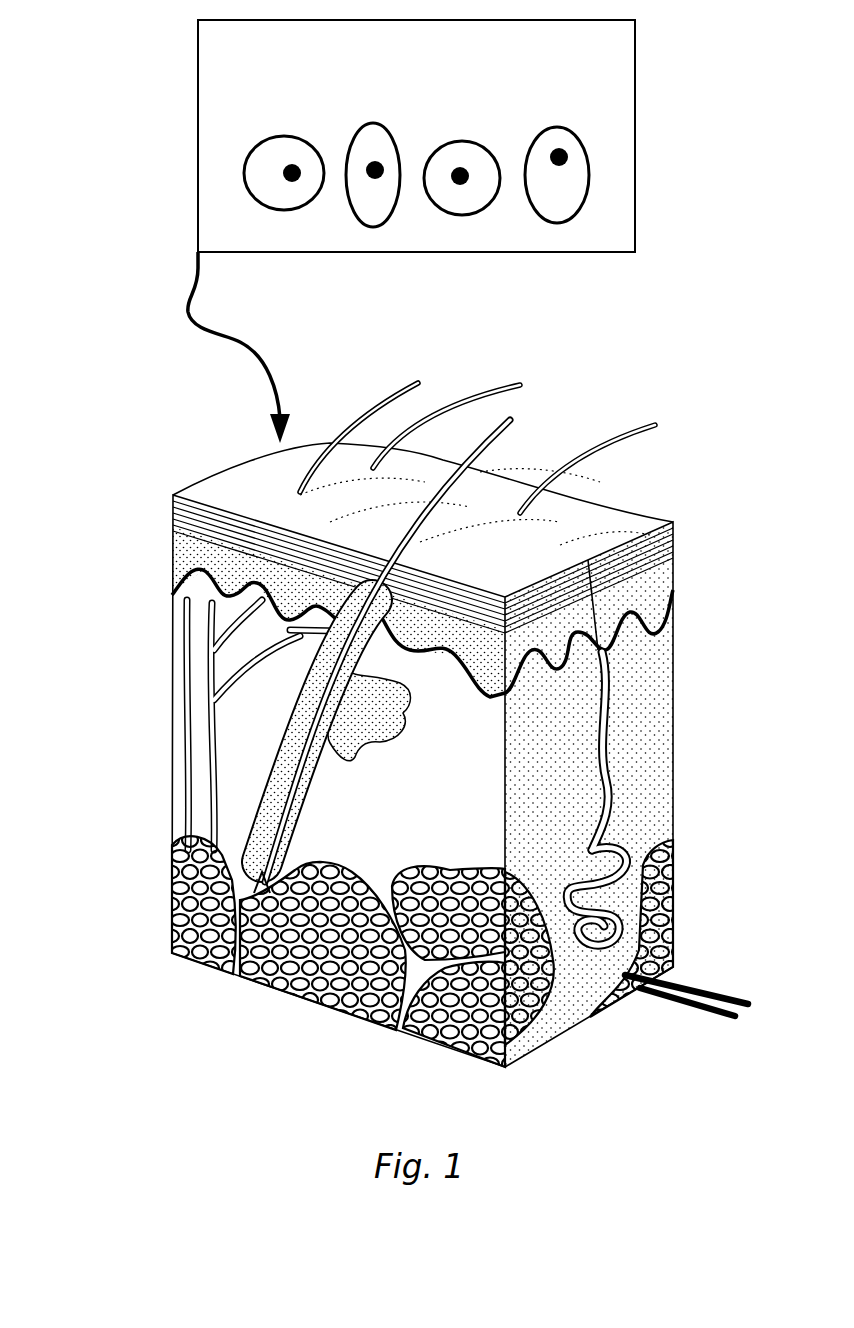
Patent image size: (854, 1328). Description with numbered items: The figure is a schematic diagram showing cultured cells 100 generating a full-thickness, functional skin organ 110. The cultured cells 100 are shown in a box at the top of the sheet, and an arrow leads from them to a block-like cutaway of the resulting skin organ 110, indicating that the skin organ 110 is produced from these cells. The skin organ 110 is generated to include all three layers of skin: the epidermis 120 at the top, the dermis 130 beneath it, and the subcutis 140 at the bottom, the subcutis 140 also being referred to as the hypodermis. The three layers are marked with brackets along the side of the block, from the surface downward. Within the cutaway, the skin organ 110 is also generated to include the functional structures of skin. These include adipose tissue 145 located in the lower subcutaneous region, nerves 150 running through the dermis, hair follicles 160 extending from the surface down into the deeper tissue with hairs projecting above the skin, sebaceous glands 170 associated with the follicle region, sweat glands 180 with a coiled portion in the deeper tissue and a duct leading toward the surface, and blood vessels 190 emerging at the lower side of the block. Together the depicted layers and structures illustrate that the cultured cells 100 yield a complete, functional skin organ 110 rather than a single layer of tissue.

The cultured cells 100 is at (554, 78).
The skin organ 110 is at (437, 838).
The epidermis 120 is at (162, 495).
The dermis 130 is at (162, 595).
The subcutis 140 is at (162, 830).
The adipose tissue 145 is at (198, 957).
The nerves 150 is at (213, 728).
The hair follicles 160 is at (258, 885).
The sebaceous glands 170 is at (377, 727).
The sweat glands 180 is at (577, 908).
The blood vessels 190 is at (700, 990).